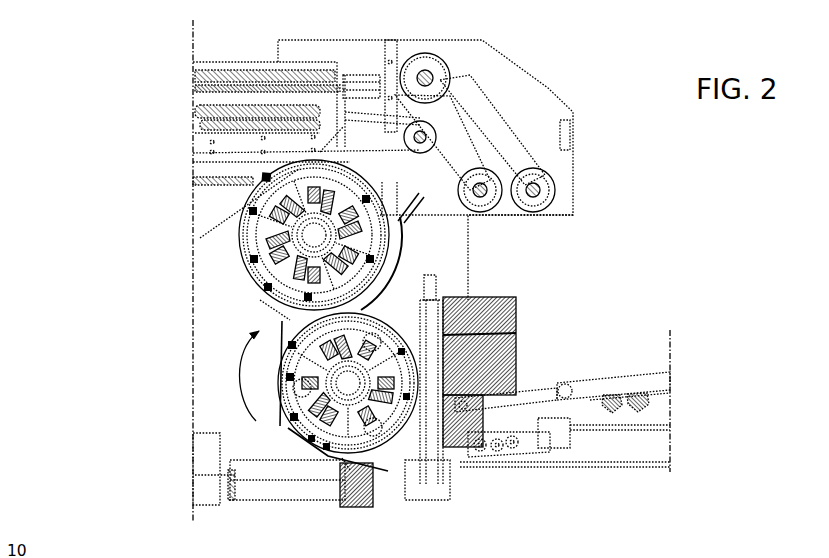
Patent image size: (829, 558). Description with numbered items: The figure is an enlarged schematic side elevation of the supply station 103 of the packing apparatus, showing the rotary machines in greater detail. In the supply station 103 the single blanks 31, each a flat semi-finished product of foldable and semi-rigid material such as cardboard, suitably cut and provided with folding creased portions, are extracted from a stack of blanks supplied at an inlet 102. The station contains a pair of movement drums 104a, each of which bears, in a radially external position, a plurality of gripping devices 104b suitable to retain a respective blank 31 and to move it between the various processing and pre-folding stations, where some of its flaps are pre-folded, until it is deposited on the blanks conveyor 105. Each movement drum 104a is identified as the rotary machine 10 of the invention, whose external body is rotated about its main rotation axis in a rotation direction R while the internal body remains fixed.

The rotary machine 10 is at (243, 315).
The movement drum 104a is at (256, 262).
The gripping device 104b is at (256, 306).
The blanks conveyor 105 is at (221, 124).
The supply station 103 is at (112, 217).
The inlet 102 is at (536, 386).
The blank 31 is at (382, 304).
The rotation direction R is at (240, 383).